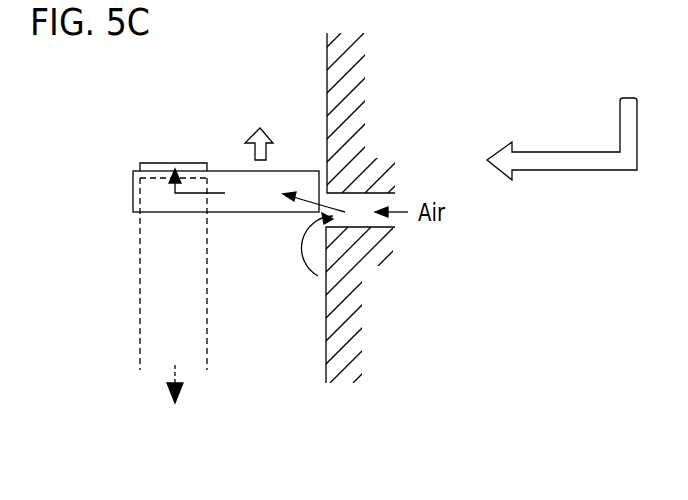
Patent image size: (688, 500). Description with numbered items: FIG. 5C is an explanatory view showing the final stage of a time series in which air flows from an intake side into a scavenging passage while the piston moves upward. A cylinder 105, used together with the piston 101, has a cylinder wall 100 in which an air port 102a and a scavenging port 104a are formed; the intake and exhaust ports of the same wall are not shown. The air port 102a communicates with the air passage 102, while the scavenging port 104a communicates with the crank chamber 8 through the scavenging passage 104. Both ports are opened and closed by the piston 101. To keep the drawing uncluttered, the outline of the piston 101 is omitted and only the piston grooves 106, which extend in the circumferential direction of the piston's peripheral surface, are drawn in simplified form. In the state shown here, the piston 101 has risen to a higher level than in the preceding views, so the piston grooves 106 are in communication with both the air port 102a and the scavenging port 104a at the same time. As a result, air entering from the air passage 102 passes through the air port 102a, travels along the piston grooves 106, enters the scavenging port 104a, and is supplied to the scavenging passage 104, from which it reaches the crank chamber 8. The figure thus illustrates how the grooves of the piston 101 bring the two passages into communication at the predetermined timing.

The crank chamber 8 is at (353, 234).
The cylinder wall 100 is at (364, 208).
The piston 101 is at (133, 195).
The air passage 102 is at (388, 220).
The air port 102a is at (311, 268).
The scavenging passage 104 is at (140, 325).
The scavenging port 104a is at (182, 163).
The cylinder 105 is at (370, 102).
The piston grooves 106 is at (184, 206).